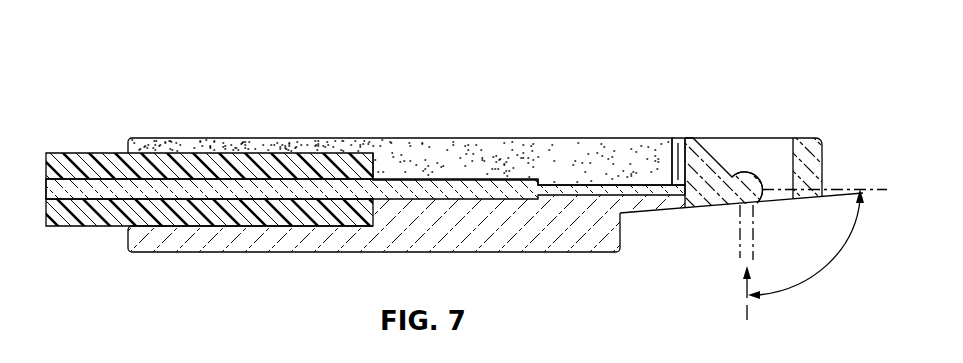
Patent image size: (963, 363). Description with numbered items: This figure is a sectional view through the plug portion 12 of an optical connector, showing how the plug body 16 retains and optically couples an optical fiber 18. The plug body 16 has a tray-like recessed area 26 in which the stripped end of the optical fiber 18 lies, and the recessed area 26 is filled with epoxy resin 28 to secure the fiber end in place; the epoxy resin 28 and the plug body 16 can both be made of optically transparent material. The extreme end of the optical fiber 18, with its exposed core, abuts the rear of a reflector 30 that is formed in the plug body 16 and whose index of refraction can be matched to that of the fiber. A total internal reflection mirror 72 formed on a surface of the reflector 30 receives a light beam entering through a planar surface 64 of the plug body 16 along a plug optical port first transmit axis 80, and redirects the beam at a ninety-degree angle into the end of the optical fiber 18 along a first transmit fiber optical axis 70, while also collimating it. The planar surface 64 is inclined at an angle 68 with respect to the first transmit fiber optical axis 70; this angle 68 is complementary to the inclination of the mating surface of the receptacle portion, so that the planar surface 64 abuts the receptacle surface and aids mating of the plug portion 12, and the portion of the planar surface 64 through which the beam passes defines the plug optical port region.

The plug portion 12 is at (200, 67).
The plug body 16 is at (202, 255).
The optical fiber 18 is at (76, 228).
The tray-like recessed area 26 is at (551, 168).
The epoxy resin 28 is at (460, 157).
The reflector 30 is at (714, 154).
The planar surface 64 is at (717, 207).
The angle 68 is at (839, 187).
The first transmit fiber optical axis 70 is at (876, 186).
The total internal reflection (TIR) mirror 72 is at (755, 178).
The plug optical port first transmit axis 80 is at (745, 312).